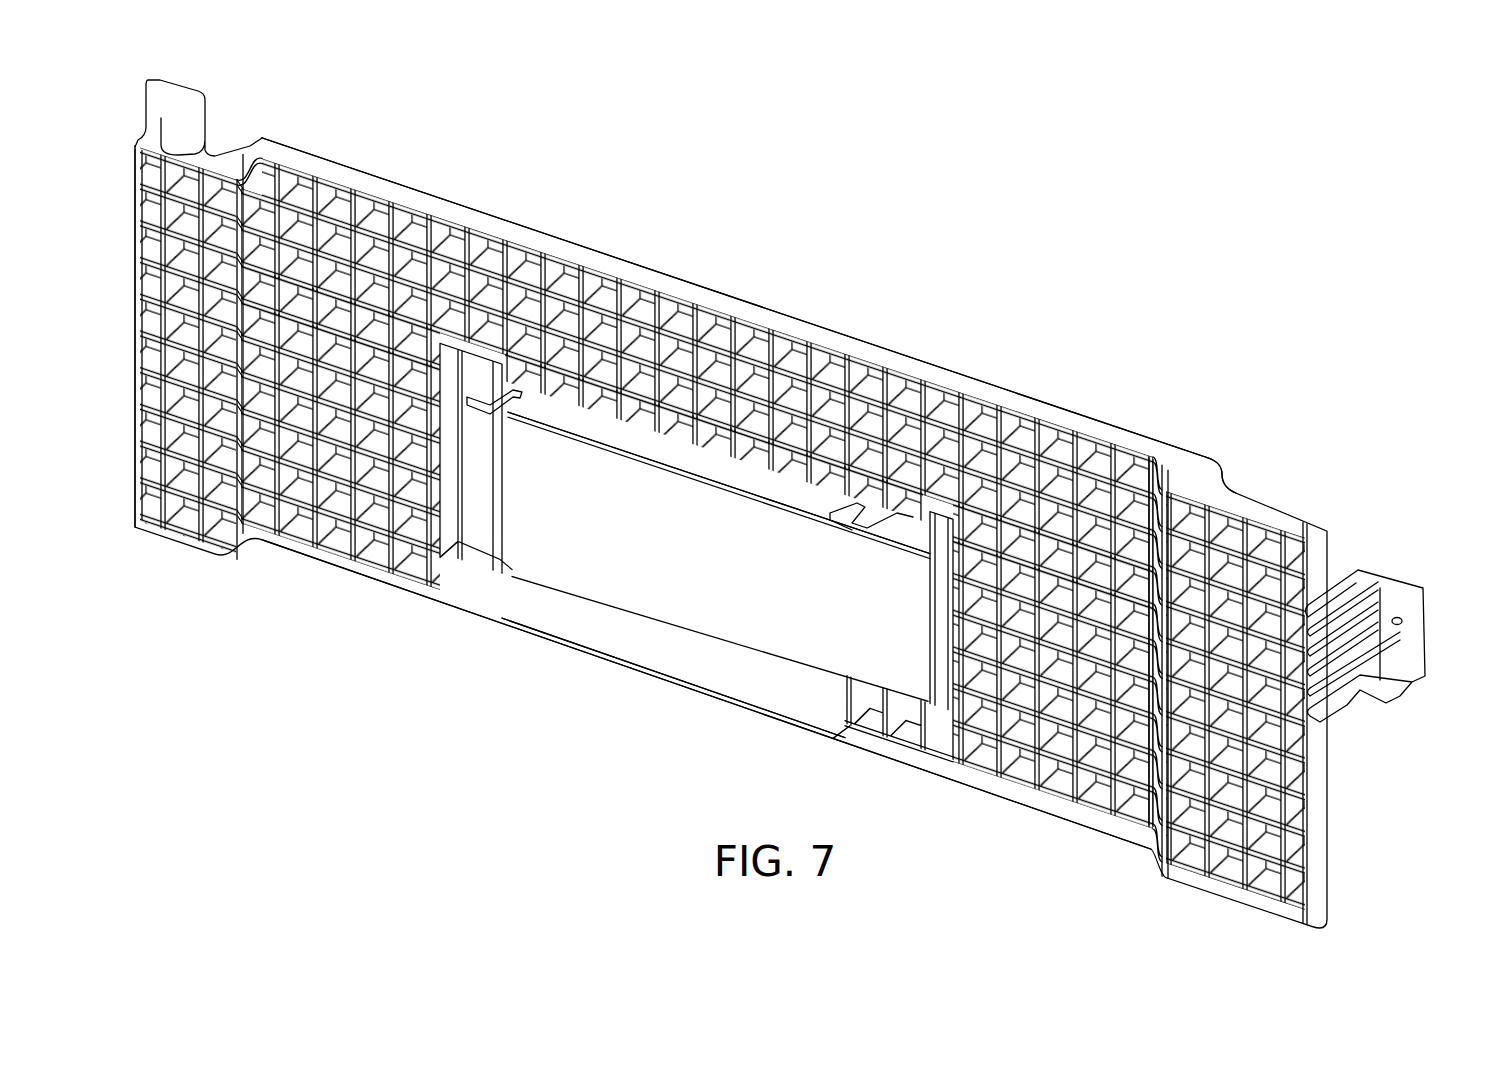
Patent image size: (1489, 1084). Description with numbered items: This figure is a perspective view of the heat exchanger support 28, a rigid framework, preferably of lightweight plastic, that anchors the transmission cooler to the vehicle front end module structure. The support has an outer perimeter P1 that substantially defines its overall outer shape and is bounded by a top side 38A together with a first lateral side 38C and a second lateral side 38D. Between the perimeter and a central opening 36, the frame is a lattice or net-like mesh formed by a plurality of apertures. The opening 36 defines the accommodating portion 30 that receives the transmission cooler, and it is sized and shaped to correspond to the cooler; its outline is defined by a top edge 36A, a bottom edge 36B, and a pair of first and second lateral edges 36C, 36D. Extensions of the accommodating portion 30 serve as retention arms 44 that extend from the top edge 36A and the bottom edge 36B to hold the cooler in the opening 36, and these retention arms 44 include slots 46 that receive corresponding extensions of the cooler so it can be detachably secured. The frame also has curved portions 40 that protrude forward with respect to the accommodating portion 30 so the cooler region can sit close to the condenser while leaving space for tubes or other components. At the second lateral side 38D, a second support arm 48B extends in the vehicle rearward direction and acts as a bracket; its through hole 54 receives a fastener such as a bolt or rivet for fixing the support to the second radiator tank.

The heat exchanger support 28 is at (880, 237).
The accommodating portion 30 is at (575, 590).
The opening 36 is at (696, 511).
The top edge 36A is at (670, 472).
The bottom edge 36B is at (718, 660).
The first lateral edge 36C is at (452, 498).
The second lateral edge 36D is at (928, 599).
The top side 38A is at (644, 262).
The first lateral side 38C is at (138, 515).
The second lateral side 38D is at (1330, 782).
The curved portions 40 is at (198, 146).
The retention arms 44 is at (555, 420).
The slots 46 is at (496, 383).
The second support arm 48B is at (1350, 702).
The through hole 54 is at (1402, 620).
The outer perimeter P1 is at (1082, 407).